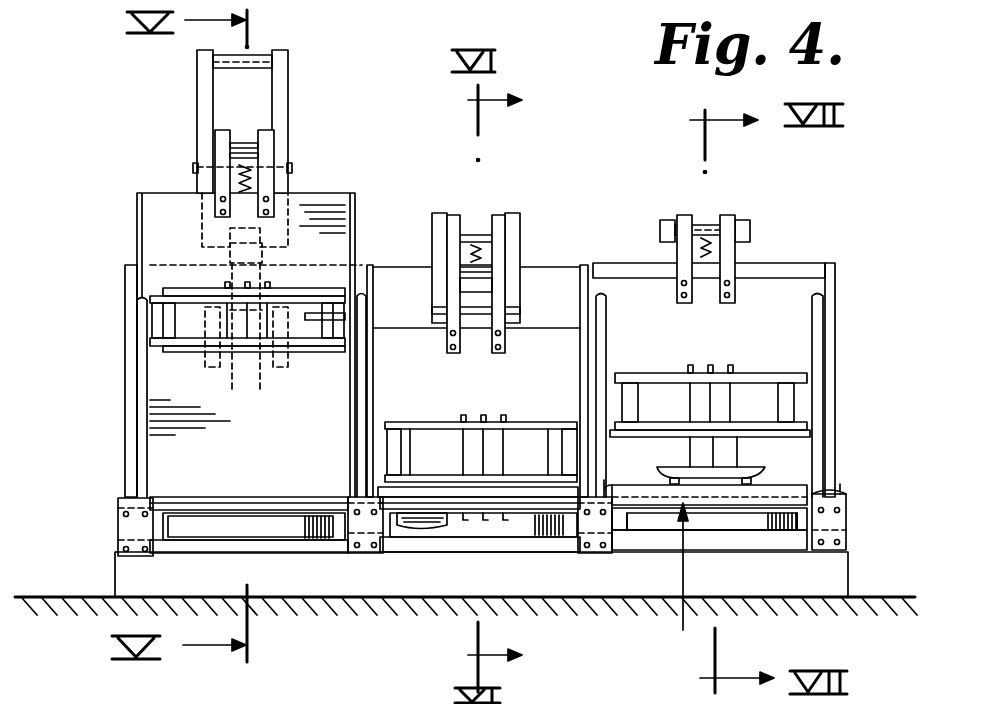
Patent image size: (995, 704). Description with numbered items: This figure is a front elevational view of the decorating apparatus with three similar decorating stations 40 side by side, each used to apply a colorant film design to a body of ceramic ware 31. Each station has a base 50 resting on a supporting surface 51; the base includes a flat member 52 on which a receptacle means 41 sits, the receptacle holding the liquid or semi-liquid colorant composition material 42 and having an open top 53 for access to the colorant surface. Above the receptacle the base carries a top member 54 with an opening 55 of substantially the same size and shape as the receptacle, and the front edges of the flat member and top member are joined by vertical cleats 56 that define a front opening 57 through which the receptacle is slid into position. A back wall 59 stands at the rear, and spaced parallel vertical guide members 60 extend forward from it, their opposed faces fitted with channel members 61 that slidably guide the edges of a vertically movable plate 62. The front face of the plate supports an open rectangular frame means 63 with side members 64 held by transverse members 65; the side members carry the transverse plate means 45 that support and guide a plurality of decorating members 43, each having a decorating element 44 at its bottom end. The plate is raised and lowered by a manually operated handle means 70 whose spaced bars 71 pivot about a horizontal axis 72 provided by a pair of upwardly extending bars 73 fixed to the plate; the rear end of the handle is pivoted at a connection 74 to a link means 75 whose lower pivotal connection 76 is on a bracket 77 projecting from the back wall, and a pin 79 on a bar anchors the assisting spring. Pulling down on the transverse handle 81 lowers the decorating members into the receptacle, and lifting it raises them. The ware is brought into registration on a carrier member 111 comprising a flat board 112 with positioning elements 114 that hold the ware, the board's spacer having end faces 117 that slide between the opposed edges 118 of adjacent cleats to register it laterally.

The body of ceramic ware 31 is at (738, 466).
The decorating station 40 is at (137, 157).
The receptacle means 41 is at (210, 527).
The colorant composition material 42 is at (412, 528).
The decorating member 43 is at (275, 355).
The decorating element 44 is at (240, 375).
The plate means 45 is at (298, 358).
The base 50 is at (115, 582).
The supporting surface 51 is at (45, 598).
The flat member 52 is at (512, 540).
The open top 53 is at (283, 515).
The top member 54 is at (298, 497).
The opening 55 is at (178, 502).
The vertical cleat 56 is at (125, 525).
The front opening 57 is at (335, 560).
The back wall 59 is at (410, 265).
The vertical guide member 60 is at (127, 275).
The channel member 61 is at (135, 310).
The movable plate 62 is at (325, 205).
The frame means 63 is at (150, 345).
The side member 64 is at (170, 320).
The transverse member 65 is at (190, 288).
The handle means 70 is at (470, 199).
The bar 71 is at (197, 78).
The horizontal axis 72 is at (290, 165).
The upwardly extending bar 73 is at (262, 130).
The pivotal connection 74 is at (215, 225).
The link means 75 is at (300, 262).
The pivotal connection 76 is at (235, 375).
The bracket 77 is at (340, 317).
The pin 79 is at (193, 167).
The transverse handle 81 is at (258, 57).
The carrier member 111 is at (680, 572).
The flat board 112 is at (748, 515).
The positioning element 114 is at (770, 483).
The end face 117 is at (606, 490).
The opposed edge 118 is at (632, 522).